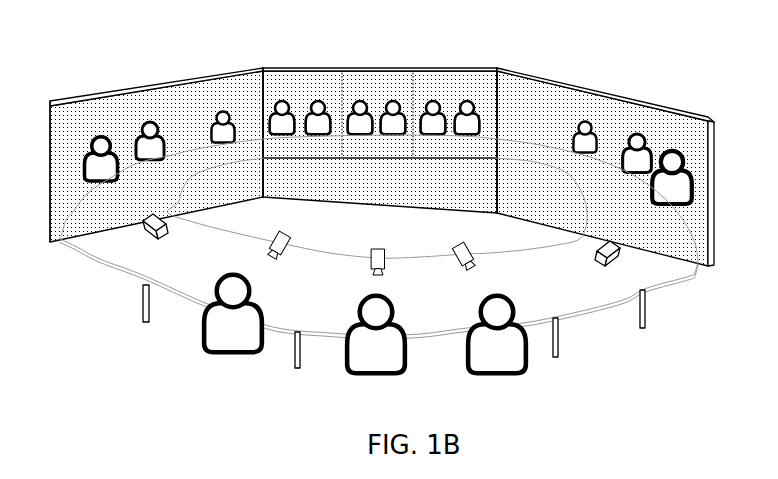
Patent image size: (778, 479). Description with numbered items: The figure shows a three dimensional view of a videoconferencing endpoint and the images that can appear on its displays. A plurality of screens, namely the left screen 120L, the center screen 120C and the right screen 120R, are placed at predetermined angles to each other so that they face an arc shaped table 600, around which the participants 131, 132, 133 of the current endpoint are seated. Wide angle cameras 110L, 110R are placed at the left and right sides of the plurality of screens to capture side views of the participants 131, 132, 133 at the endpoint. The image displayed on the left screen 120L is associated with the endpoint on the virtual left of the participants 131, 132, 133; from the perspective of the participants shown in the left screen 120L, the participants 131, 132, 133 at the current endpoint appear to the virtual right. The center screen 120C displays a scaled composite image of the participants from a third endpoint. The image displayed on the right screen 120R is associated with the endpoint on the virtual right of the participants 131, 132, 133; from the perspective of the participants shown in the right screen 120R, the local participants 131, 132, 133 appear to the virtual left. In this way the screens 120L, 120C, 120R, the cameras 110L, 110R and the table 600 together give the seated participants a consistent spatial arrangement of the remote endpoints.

The left screen 120L is at (156, 150).
The center screen 120C is at (380, 127).
The right screen 120R is at (605, 167).
The left wide angle camera 110L is at (142, 244).
The right wide angle camera 110R is at (628, 270).
The arc shaped table 600 is at (203, 277).
The participant 131 is at (233, 314).
The participant 132 is at (376, 335).
The participant 133 is at (497, 335).